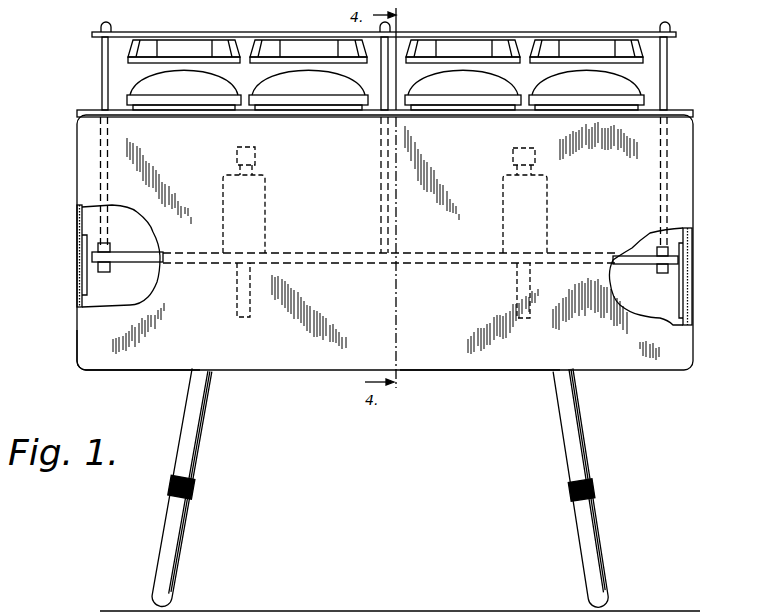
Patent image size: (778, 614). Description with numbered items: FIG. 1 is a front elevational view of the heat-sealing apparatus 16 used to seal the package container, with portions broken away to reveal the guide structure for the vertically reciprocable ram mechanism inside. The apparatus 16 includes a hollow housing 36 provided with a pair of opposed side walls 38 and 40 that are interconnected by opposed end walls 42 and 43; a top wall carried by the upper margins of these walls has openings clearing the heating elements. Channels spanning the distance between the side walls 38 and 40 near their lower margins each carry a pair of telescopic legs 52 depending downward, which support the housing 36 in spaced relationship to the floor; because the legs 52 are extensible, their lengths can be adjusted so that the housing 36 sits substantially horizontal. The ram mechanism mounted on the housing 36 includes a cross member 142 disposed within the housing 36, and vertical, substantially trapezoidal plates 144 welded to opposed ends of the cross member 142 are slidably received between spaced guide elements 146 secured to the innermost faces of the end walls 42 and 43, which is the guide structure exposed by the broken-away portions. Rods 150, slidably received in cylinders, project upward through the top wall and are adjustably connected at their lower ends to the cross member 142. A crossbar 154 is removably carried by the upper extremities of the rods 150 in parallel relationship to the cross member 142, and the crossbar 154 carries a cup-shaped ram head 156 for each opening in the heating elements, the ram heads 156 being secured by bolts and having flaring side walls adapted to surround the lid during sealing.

The apparatus 16 is at (457, 370).
The hollow housing 36 is at (76, 178).
The side wall 38 is at (93, 295).
The side wall 40 is at (93, 338).
The end wall 42 is at (77, 232).
The end wall 43 is at (693, 263).
The telescopic legs 52 is at (173, 530).
The cross member 142 is at (128, 258).
The trapezoidal plates 144 is at (677, 273).
The guide elements 146 is at (689, 308).
The rods 150 is at (102, 85).
The crossbar 154 is at (449, 32).
The ram head 156 is at (128, 50).